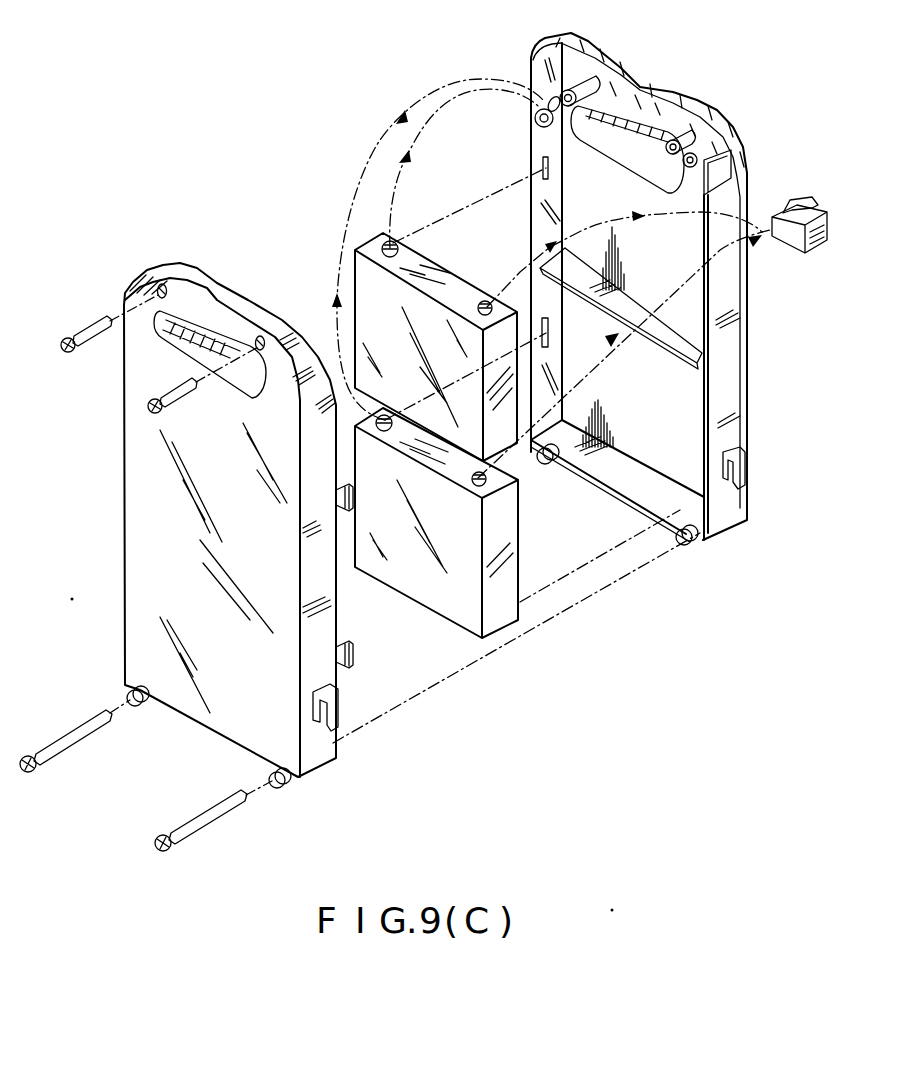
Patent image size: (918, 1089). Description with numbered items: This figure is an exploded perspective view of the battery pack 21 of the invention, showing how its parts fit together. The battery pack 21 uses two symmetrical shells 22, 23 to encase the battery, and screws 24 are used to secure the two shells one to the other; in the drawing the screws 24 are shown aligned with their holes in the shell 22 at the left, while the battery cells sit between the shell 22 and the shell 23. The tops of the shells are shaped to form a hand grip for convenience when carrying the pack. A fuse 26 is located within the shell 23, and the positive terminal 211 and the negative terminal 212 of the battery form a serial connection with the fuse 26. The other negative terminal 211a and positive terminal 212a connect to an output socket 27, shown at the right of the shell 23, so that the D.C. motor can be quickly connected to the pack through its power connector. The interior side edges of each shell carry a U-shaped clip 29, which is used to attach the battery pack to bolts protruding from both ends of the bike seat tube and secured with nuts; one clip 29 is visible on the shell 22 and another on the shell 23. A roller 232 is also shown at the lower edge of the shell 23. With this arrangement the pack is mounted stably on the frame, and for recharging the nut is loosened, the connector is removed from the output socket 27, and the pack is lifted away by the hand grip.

The battery pack 21 is at (365, 290).
The positive terminal 211 is at (376, 421).
The negative terminal 211a is at (478, 488).
The negative terminal 212 is at (398, 245).
The positive terminal 212a is at (485, 300).
The shell 22 is at (137, 427).
The shell 23 is at (540, 147).
The screws 24 is at (92, 326).
The fuse 26 is at (543, 145).
The output socket 27 is at (797, 212).
The U-shaped clip 29 is at (313, 698).
The roller 232 is at (690, 548).